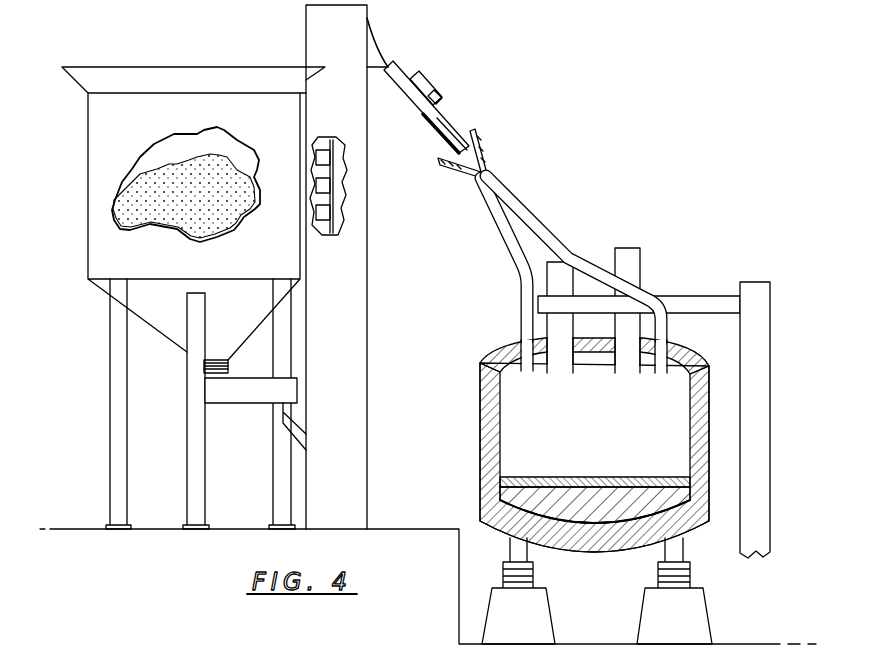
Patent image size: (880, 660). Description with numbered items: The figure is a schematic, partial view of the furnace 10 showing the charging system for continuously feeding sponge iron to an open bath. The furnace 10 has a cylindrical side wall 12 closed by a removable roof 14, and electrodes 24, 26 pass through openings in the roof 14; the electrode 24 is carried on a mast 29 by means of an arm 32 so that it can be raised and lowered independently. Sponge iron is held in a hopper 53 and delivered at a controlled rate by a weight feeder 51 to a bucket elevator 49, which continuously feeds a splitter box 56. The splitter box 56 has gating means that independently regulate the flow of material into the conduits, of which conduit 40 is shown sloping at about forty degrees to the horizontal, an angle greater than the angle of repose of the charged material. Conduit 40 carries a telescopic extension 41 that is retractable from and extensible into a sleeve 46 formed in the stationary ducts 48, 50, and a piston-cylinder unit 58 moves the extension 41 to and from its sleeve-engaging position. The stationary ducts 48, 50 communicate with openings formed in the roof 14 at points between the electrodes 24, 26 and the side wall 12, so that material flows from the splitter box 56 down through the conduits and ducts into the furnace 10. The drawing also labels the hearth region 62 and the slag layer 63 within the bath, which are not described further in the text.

The furnace 10 is at (566, 447).
The cylindrical side wall 12 is at (486, 399).
The removable roof 14 is at (478, 368).
The electrode 24 is at (560, 417).
The electrode 26 is at (632, 413).
The mast 29 is at (757, 423).
The arm 32 is at (691, 300).
The conduit 40 is at (396, 66).
The telescopic extension 41 is at (448, 127).
The sleeve 46 is at (484, 148).
The stationary duct 48 is at (508, 238).
The bucket elevator 49 is at (338, 173).
The stationary duct 50 is at (530, 223).
The weight feeder 51 is at (255, 393).
The hopper 53 is at (101, 174).
The splitter box 56 is at (384, 42).
The piston-cylinder unit 58 is at (438, 96).
The furnace hearth bottom 62 is at (607, 533).
The slag layer surface 63 is at (648, 478).